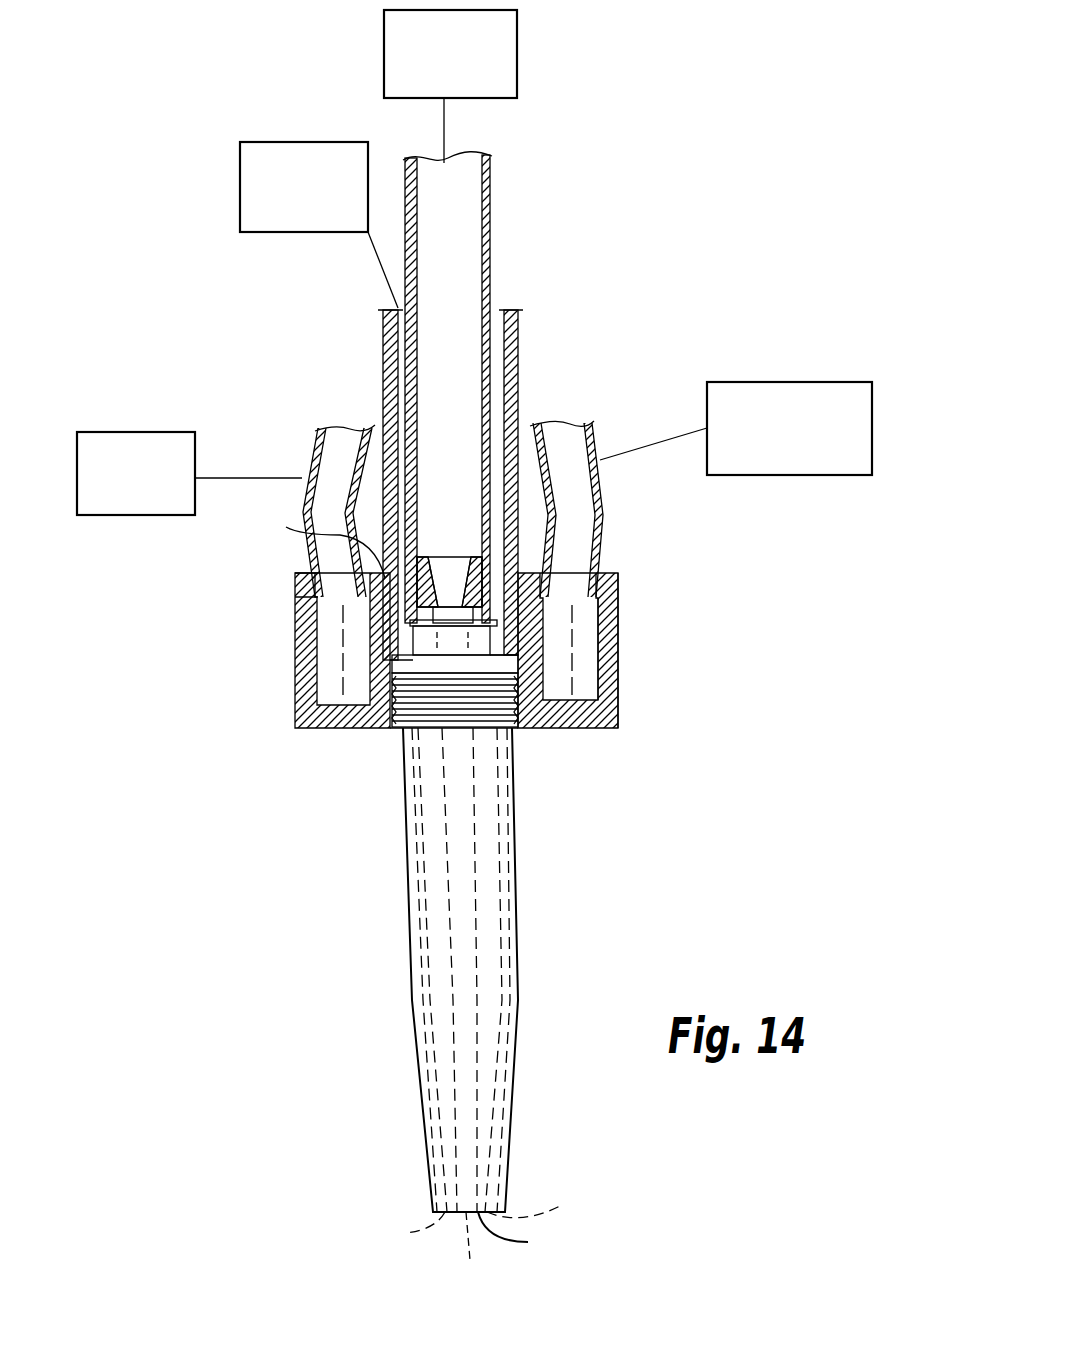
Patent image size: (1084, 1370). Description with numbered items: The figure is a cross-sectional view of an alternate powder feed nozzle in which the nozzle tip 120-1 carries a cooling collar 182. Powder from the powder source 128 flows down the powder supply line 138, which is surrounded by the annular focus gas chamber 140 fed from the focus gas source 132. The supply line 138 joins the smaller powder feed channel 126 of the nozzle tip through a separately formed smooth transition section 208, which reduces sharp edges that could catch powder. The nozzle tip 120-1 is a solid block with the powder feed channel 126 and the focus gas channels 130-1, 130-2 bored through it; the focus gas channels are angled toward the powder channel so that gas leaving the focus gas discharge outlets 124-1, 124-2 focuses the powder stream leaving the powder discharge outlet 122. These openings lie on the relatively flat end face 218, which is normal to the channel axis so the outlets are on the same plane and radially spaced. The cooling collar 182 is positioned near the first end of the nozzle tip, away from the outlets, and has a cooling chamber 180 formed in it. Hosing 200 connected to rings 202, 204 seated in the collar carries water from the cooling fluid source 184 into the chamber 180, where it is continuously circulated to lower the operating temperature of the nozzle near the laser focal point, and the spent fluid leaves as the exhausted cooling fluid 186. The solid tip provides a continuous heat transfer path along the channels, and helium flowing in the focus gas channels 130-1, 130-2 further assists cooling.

The powder source 128 is at (520, 42).
The focus gas source 132 is at (300, 142).
The powder supply line 138 is at (468, 312).
The annular focus gas chamber 140 is at (492, 340).
The cooling fluid source 184 is at (115, 432).
The exhausted cooling fluid 186 is at (737, 382).
The hosing 200 is at (308, 438).
The ring 202 is at (311, 540).
The ring 204 is at (308, 575).
The smooth transition section 208 is at (441, 556).
The cooling chamber 180 is at (580, 628).
The cooling collar 182 is at (294, 640).
The nozzle tip 120-1 is at (566, 826).
The powder feed channel 126 is at (460, 920).
The focus gas channel 130-1 is at (425, 933).
The focus gas channel 130-2 is at (505, 950).
The focus gas discharge outlet 124-1 is at (394, 1225).
The focus gas discharge outlet 124-2 is at (566, 1198).
The flat end face 218 is at (533, 1235).
The powder discharge outlet 122 is at (480, 1254).